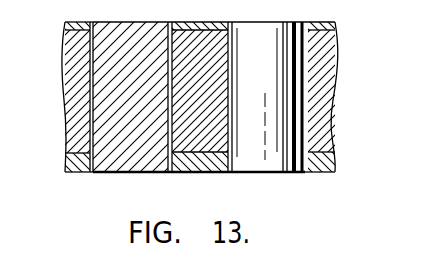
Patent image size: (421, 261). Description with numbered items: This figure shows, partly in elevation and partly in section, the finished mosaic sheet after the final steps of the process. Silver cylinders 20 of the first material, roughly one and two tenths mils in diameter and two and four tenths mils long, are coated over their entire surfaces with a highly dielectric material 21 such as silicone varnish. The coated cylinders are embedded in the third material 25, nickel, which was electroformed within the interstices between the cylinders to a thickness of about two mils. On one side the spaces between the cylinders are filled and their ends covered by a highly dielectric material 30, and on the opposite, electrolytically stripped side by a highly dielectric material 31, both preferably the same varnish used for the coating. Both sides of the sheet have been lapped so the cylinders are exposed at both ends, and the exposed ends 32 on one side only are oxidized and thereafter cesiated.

The cylinders 20 is at (134, 34).
The highly dielectric material 21 is at (173, 38).
The third material 25 is at (203, 38).
The highly dielectric material 30 is at (80, 29).
The highly dielectric material 31 is at (78, 158).
The exposed ends 32 is at (161, 173).